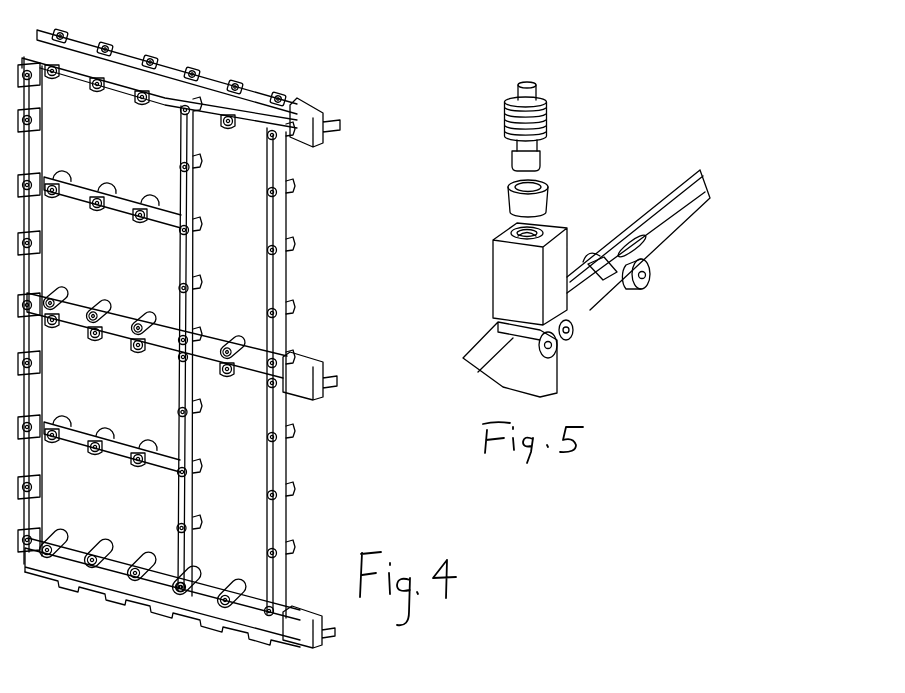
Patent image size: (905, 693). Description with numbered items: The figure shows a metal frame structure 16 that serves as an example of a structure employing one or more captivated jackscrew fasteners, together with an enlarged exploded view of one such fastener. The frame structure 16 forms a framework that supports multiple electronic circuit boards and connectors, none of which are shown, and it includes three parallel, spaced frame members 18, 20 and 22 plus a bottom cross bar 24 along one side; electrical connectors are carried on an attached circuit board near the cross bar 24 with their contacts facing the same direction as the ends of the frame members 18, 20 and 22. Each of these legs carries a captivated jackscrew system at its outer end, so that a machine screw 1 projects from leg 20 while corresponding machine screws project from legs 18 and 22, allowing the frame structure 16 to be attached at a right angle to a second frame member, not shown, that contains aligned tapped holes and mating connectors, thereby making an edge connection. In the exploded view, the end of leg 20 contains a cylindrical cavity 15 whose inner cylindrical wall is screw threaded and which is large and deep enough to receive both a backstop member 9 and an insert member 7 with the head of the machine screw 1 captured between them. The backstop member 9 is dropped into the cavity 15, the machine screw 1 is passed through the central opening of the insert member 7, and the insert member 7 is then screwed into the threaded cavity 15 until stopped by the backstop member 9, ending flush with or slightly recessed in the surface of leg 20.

In FIG. 4, the machine screw 1 is at (337, 160).
In FIG. 5, the machine screw 1 is at (549, 88).
In FIG. 5, the insert member 7 is at (557, 115).
In FIG. 5, the backstop member 9 is at (548, 190).
In FIG. 5, the cylindrical cavity 15 is at (492, 229).
In FIG. 4, the frame structure 16 is at (272, 75).
In FIG. 4, the frame member 18 is at (177, 68).
In FIG. 4, the frame member 20 is at (212, 340).
In FIG. 5, the frame member 20 is at (583, 365).
In FIG. 4, the frame member 22 is at (212, 583).
In FIG. 4, the bottom cross bar 24 is at (266, 470).